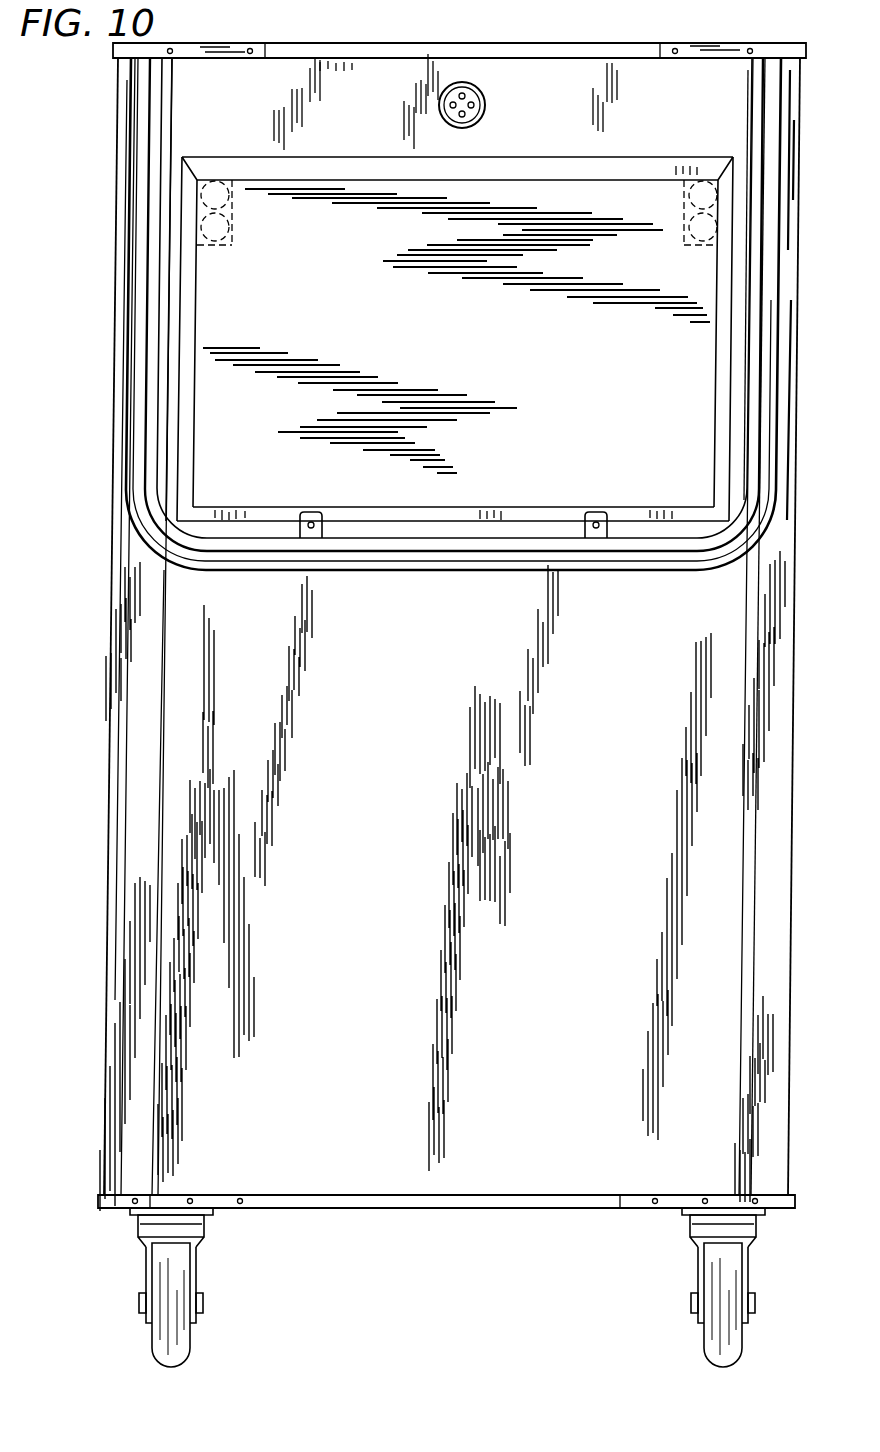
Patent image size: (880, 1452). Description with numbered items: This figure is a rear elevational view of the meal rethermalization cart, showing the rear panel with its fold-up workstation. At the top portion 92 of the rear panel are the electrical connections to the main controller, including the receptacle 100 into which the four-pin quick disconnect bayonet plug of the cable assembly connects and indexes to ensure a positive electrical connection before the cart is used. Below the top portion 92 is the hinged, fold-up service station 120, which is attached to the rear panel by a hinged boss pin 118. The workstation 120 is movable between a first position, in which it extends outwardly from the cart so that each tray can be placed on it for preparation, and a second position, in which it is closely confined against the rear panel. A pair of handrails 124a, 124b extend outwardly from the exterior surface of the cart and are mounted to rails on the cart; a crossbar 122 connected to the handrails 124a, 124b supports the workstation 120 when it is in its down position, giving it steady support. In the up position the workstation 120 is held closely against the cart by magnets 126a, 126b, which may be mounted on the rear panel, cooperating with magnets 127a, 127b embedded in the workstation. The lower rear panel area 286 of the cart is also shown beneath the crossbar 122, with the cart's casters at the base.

The top portion 92 is at (597, 43).
The receptacle 100 is at (487, 115).
The hinged boss pin 118 is at (590, 518).
The service station 120 is at (730, 433).
The crossbar 122 is at (370, 572).
The handrail 124a is at (92, 626).
The handrail 124b is at (786, 112).
The magnet 126a is at (230, 203).
The magnet 126b is at (694, 205).
The magnet 127a is at (214, 247).
The magnet 127b is at (705, 247).
The front panel 286 is at (385, 846).